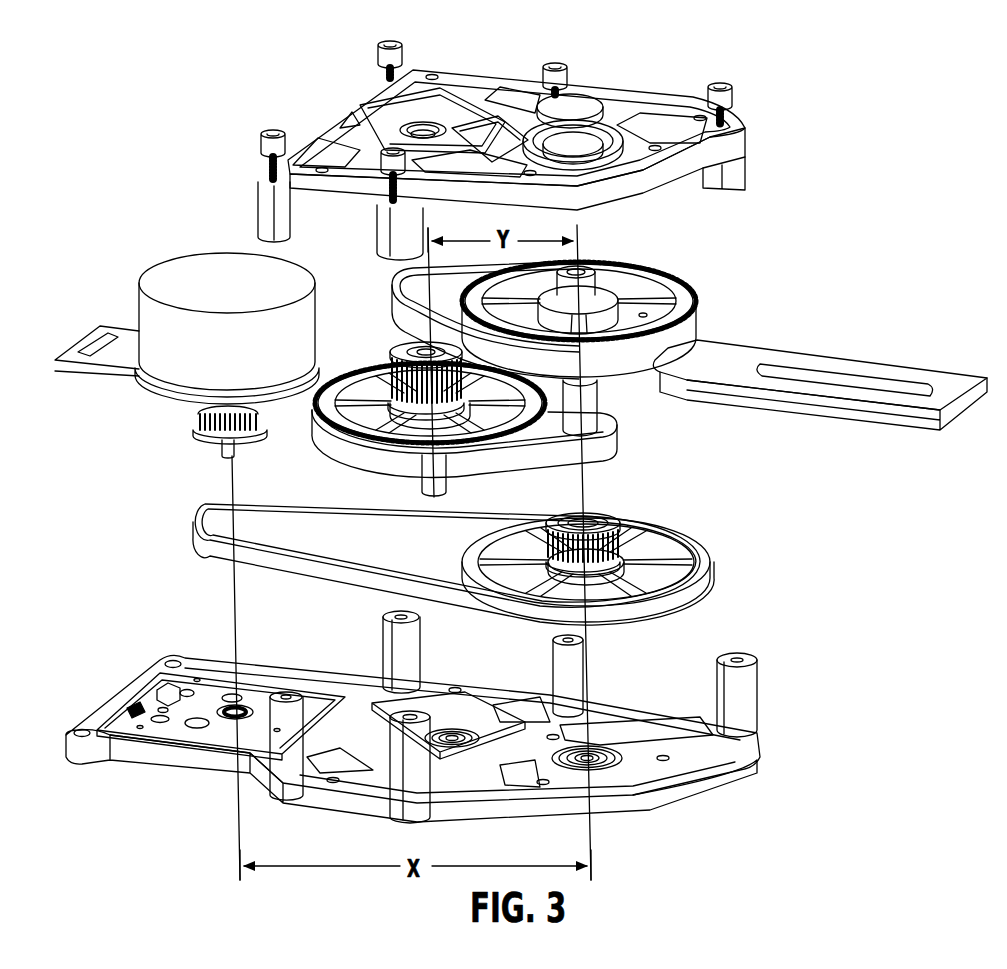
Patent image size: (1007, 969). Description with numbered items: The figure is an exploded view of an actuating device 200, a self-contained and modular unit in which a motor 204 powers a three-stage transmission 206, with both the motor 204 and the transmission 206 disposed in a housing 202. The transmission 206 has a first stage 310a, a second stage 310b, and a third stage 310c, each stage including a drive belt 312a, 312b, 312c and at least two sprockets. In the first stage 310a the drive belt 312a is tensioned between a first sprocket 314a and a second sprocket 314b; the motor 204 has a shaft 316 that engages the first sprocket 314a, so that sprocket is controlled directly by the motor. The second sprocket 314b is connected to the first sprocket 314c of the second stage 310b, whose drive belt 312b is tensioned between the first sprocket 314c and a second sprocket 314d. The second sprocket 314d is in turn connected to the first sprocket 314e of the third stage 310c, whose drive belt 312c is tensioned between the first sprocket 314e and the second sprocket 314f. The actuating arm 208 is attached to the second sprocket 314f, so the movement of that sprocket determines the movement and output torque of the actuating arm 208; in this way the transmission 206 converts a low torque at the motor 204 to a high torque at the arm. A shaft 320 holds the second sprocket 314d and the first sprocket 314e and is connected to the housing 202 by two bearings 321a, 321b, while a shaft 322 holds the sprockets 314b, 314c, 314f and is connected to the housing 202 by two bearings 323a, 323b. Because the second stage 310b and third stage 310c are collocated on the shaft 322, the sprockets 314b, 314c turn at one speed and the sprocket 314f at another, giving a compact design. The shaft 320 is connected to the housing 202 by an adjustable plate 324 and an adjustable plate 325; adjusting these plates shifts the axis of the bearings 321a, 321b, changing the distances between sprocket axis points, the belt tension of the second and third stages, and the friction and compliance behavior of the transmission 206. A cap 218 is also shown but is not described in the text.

The actuating device 200 is at (661, 45).
The housing 202 is at (712, 95).
The motor 204 is at (185, 268).
The transmission 206 is at (790, 512).
The actuating arm 208 is at (903, 372).
The cap 218 is at (579, 102).
The first stage 310a is at (737, 568).
The second stage 310b is at (650, 442).
The third stage 310c is at (722, 289).
The drive belt 312a is at (295, 558).
The drive belt 312b is at (325, 435).
The drive belt 312c is at (408, 293).
The first sprocket 314a is at (200, 423).
The second sprocket 314b is at (663, 557).
The first sprocket 314c is at (612, 530).
The second sprocket 314d is at (392, 387).
The first sprocket 314e is at (428, 342).
The second sprocket 314f is at (650, 290).
The shaft 316 is at (226, 458).
The shaft 320 is at (420, 480).
The bearing 321a is at (430, 746).
The bearing 321b is at (424, 128).
The shaft 322 is at (590, 392).
The bearing 323a is at (610, 752).
The bearing 323b is at (578, 145).
The adjustable plate 324 is at (480, 728).
The adjustable plate 325 is at (455, 130).